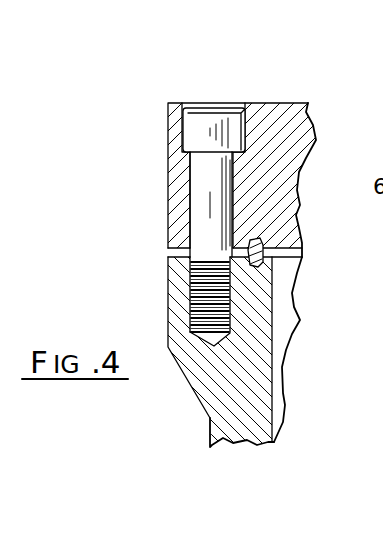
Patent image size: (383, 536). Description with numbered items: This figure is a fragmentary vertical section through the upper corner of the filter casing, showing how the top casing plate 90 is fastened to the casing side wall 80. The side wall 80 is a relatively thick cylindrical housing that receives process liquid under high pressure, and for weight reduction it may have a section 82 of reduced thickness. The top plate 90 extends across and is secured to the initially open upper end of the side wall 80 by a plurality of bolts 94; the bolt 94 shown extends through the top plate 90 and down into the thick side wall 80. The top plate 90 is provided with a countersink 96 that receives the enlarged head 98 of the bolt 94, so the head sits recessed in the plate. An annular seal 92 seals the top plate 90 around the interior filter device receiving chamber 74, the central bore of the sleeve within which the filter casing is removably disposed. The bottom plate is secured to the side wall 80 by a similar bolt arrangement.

The filter device receiving chamber 74 is at (280, 325).
The side wall 80 is at (178, 291).
The section of reduced thickness 82 is at (212, 431).
The top casing plate 90 is at (288, 105).
The annular seal 92 is at (260, 257).
The bolt 94 is at (207, 182).
The countersink 96 is at (238, 104).
The enlarged head 98 is at (205, 122).